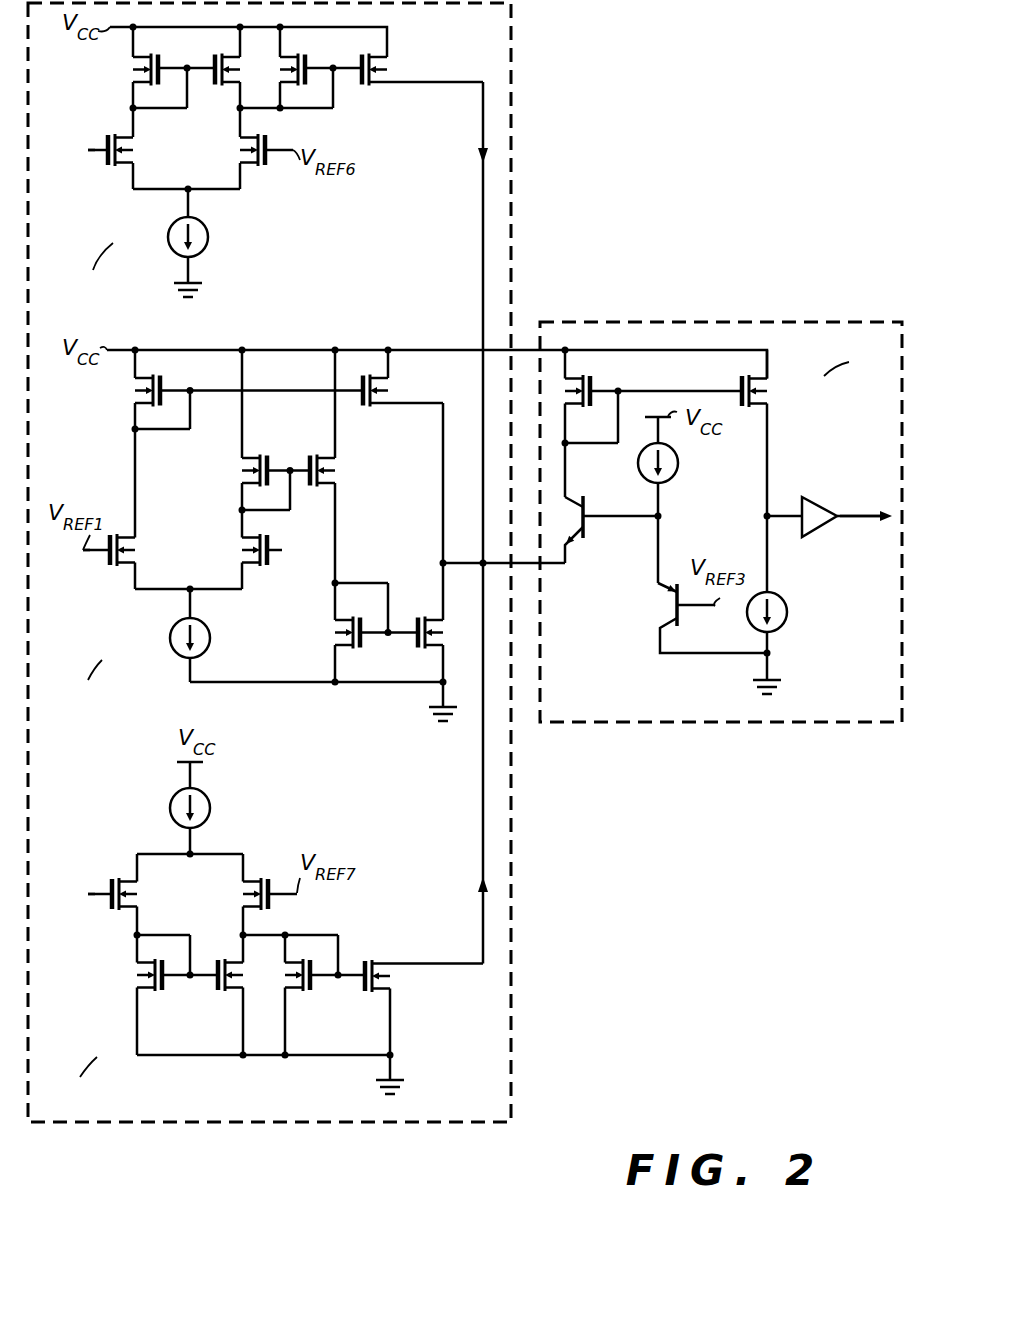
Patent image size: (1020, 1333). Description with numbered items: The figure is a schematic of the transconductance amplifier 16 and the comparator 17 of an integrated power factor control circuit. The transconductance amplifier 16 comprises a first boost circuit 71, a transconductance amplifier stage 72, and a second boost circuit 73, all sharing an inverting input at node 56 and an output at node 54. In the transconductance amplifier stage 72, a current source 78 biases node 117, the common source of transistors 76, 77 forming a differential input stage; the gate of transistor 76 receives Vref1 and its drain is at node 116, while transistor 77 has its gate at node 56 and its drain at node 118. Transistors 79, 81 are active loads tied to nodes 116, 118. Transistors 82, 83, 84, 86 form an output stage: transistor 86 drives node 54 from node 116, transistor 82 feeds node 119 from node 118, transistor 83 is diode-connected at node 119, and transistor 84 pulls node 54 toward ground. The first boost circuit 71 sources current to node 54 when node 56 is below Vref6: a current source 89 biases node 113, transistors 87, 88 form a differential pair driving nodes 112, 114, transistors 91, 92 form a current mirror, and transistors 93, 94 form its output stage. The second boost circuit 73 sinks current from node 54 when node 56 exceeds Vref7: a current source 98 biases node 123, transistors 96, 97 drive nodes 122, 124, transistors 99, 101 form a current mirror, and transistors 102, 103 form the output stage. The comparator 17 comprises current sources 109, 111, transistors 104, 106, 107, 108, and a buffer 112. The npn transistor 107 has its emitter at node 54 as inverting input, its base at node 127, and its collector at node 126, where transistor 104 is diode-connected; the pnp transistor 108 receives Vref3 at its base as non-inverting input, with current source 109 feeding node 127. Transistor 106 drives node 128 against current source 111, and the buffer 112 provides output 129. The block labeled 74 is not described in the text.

The transconductance amplifier 16 is at (513, 885).
The comparator 17 is at (718, 724).
The node 54 is at (440, 563).
The node 56 is at (88, 150).
The first boost circuit 71 is at (91, 271).
The transconductance amplifier stage 72 is at (81, 686).
The second boost circuit 73 is at (75, 1081).
The output buffer stage 74 is at (853, 359).
The transistor 76 is at (127, 552).
The transistor 77 is at (250, 548).
The current source 78 is at (210, 640).
The transistor 79 is at (136, 391).
The transistor 81 is at (243, 470).
The transistor 82 is at (336, 472).
The transistor 83 is at (336, 632).
The transistor 84 is at (433, 633).
The transistor 86 is at (389, 392).
The transistor 87 is at (127, 148).
The transistor 88 is at (245, 148).
The current source 89 is at (210, 237).
The transistor 91 is at (135, 69).
The transistor 92 is at (241, 73).
The transistor 93 is at (281, 70).
The transistor 94 is at (388, 70).
The transistor 96 is at (132, 890).
The transistor 97 is at (250, 894).
The current source 98 is at (212, 795).
The transistor 99 is at (140, 974).
The transistor 101 is at (250, 990).
The transistor 102 is at (283, 990).
The transistor 103 is at (388, 976).
The transistor 104 is at (558, 400).
The transistor 106 is at (770, 390).
The transistor 107 is at (598, 518).
The transistor 108 is at (685, 612).
The current source 109 is at (682, 455).
The current source 111 is at (789, 600).
The node / buffer 112 is at (188, 72).
The node 113 is at (188, 186).
The node 114 is at (282, 110).
The node 116 is at (190, 388).
The node 117 is at (186, 591).
The node 118 is at (292, 463).
The node 119 is at (337, 582).
The node 122 is at (130, 933).
The node 123 is at (197, 850).
The node 124 is at (280, 932).
The node 126 is at (618, 385).
The node 127 is at (663, 513).
The node 128 is at (760, 518).
The output 129 is at (866, 522).